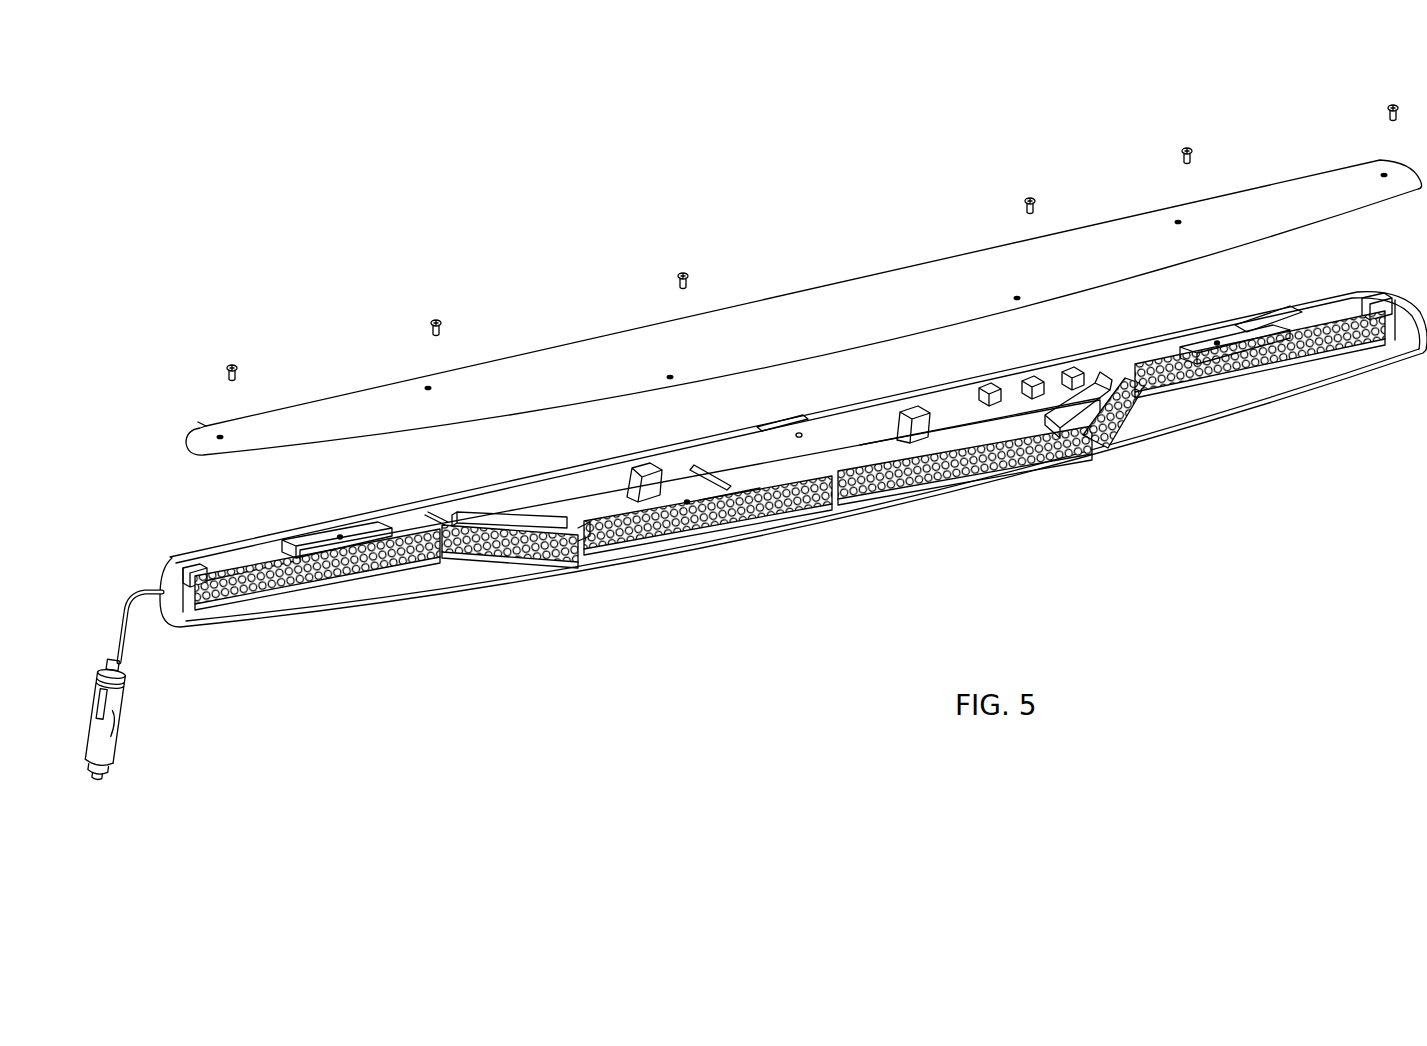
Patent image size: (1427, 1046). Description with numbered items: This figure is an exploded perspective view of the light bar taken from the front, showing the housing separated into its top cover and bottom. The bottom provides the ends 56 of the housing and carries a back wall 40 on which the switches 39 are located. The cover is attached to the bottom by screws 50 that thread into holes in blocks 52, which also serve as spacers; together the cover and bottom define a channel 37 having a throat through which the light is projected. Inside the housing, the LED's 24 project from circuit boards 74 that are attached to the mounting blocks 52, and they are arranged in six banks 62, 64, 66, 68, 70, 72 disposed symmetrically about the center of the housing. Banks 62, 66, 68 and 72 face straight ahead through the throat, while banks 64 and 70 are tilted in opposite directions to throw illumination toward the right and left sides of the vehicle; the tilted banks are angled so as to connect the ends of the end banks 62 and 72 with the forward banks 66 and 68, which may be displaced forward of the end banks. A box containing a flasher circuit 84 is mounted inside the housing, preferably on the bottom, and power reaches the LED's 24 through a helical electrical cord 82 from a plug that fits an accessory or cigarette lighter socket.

The LED's 24 is at (728, 527).
The channel 37 is at (871, 428).
The switches 39 is at (1077, 365).
The back wall 40 is at (647, 452).
The screws 50 is at (428, 323).
The blocks 52 is at (457, 507).
The ends 56 is at (173, 606).
The bank 62 is at (337, 575).
The bank 64 is at (520, 553).
The bank 66 is at (775, 515).
The bank 68 is at (965, 472).
The bank 70 is at (1122, 422).
The bank 72 is at (1228, 377).
The circuit boards 74 is at (598, 527).
The helical electrical cord 82 is at (128, 723).
The flasher circuit 84 is at (785, 462).